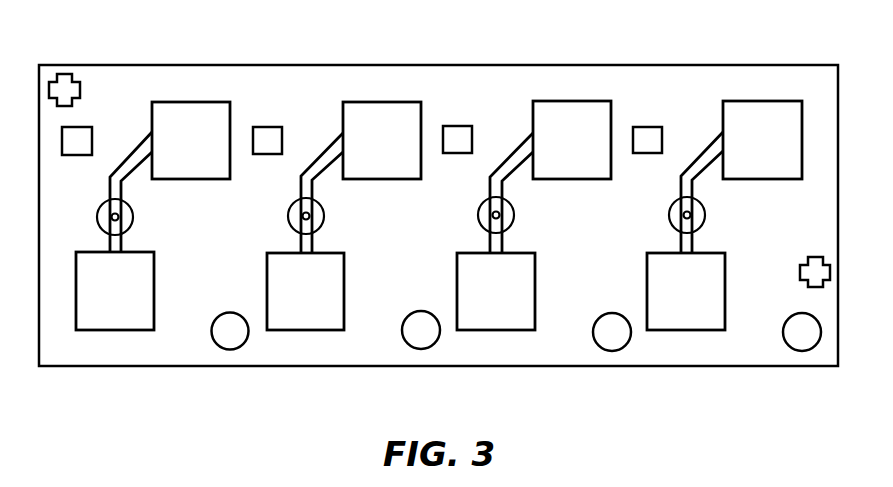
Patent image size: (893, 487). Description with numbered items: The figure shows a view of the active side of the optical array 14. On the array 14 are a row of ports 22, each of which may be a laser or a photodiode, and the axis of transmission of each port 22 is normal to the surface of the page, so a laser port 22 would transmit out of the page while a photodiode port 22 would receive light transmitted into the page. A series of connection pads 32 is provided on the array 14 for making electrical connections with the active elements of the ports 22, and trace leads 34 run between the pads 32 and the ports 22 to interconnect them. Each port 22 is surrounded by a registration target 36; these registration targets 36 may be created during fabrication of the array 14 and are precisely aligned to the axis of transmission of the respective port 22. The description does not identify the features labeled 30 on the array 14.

The optical array 14 is at (262, 367).
The port 22 is at (287, 215).
The fiducial mark 30 is at (810, 257).
The connection pad 32 is at (571, 102).
The trace lead 34 is at (698, 152).
The registration target 36 is at (458, 126).